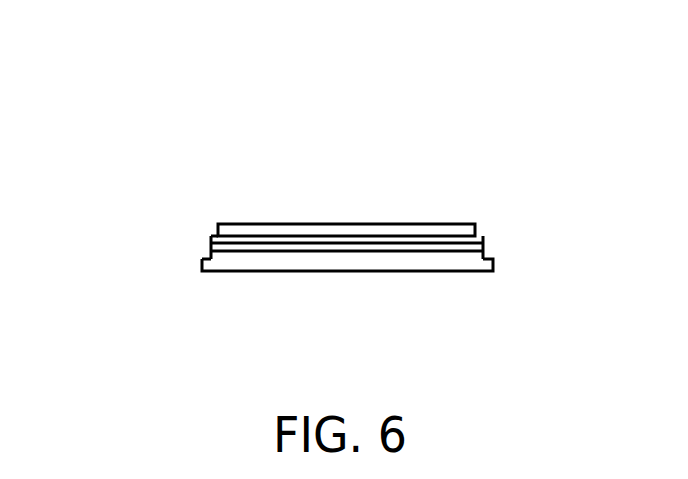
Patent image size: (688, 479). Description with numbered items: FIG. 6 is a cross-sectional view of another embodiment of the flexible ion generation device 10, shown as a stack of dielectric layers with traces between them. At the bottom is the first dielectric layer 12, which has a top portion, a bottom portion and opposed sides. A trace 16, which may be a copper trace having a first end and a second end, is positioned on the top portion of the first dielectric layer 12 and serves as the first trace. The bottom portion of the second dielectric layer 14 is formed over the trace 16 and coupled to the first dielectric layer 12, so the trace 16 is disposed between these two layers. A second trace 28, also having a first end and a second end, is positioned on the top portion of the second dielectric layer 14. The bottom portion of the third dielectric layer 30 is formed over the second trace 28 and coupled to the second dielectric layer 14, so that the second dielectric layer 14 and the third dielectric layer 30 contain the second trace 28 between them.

The flexible ion generation device 10 is at (333, 164).
The first dielectric layer 12 is at (493, 262).
The second dielectric layer 14 is at (487, 247).
The trace 16 is at (207, 257).
The second trace 28 is at (216, 236).
The third dielectric layer 30 is at (477, 231).